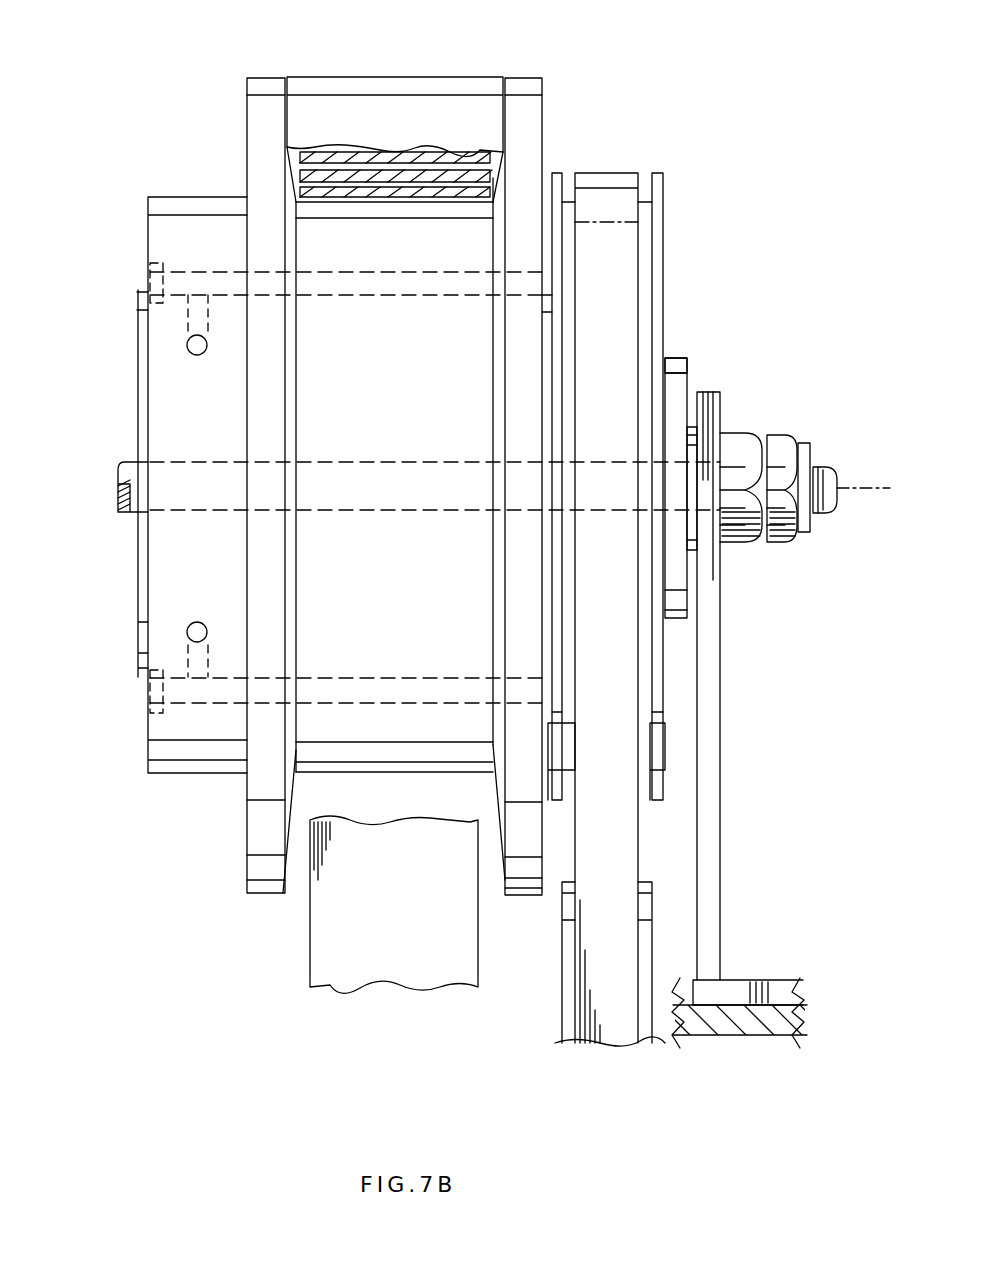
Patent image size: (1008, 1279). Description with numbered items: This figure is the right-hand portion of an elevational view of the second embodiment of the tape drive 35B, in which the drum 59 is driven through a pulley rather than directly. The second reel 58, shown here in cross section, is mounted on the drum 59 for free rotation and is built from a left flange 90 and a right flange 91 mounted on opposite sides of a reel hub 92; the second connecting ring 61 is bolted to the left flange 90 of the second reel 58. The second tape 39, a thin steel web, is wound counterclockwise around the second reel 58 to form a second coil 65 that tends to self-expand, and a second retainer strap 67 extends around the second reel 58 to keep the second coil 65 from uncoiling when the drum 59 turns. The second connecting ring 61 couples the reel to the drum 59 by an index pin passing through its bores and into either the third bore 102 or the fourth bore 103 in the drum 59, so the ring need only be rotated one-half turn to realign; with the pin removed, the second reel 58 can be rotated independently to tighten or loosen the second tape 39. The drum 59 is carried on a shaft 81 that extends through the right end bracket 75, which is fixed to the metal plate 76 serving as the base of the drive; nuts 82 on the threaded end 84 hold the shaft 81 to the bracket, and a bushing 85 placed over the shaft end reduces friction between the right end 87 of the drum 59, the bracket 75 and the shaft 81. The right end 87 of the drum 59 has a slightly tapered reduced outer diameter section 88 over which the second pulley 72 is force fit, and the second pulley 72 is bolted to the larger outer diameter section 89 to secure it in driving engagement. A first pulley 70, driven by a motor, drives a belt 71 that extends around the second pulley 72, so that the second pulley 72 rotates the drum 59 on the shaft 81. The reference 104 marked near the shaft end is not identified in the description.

The tape drive 35B is at (633, 112).
The second tape 39 is at (465, 177).
The second reel 58 is at (397, 122).
The drum 59 is at (146, 680).
The second connecting ring 61 is at (183, 205).
The second coil 65 is at (497, 182).
The second retainer strap 67 is at (388, 88).
The first pulley 70 is at (565, 1005).
The belt 71 is at (625, 853).
The second pulley 72 is at (655, 742).
The right end bracket 75 is at (712, 605).
The metal plate 76 is at (766, 1027).
The shaft 81 is at (125, 470).
The nuts 82 is at (735, 432).
The threaded end 84 is at (818, 467).
The bushing 85 is at (690, 548).
The right end 87 is at (687, 375).
The reduced outer diameter section 88 is at (680, 357).
The larger outer diameter section 89 is at (545, 295).
The left flange 90 is at (256, 128).
The right flange 91 is at (533, 145).
The reel hub 92 is at (328, 210).
The third bore 102 is at (198, 355).
The fourth bore 103 is at (198, 622).
The axis 104 is at (872, 490).